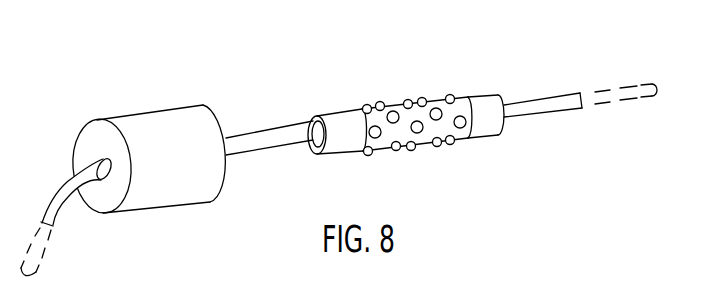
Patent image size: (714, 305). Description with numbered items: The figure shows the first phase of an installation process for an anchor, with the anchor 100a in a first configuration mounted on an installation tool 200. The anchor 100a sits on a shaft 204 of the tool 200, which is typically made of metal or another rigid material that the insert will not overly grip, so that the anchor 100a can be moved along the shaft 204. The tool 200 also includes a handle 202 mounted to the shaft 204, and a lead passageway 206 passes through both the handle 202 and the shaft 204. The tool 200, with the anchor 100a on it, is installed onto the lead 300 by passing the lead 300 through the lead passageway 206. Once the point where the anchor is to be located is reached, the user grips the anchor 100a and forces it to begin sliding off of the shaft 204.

The installation tool 200 is at (250, 75).
The handle 202 is at (152, 130).
The shaft 204 is at (258, 145).
The lead passageway 206 is at (95, 218).
The anchor in first configuration 100a is at (405, 93).
The lead 300 is at (550, 113).